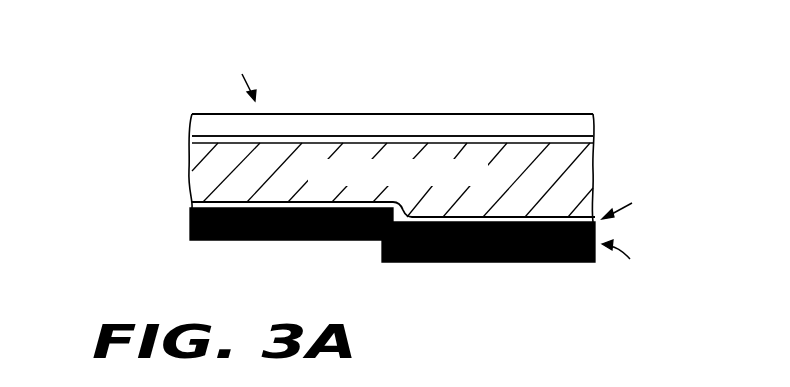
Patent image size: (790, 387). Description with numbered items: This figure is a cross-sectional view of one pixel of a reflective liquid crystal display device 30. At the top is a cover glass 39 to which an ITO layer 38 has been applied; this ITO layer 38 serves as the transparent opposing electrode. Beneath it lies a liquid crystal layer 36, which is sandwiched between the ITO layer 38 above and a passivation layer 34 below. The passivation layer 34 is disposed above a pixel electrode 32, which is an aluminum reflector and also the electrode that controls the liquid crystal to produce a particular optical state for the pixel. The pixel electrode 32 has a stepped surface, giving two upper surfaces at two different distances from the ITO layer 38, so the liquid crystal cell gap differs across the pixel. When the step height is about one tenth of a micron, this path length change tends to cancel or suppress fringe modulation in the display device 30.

The display device 30 is at (404, 162).
The pixel electrode 32 is at (244, 242).
The passivation layer 34 is at (192, 203).
The liquid crystal layer 36 is at (194, 157).
The ITO layer 38 is at (594, 139).
The cover glass 39 is at (459, 119).